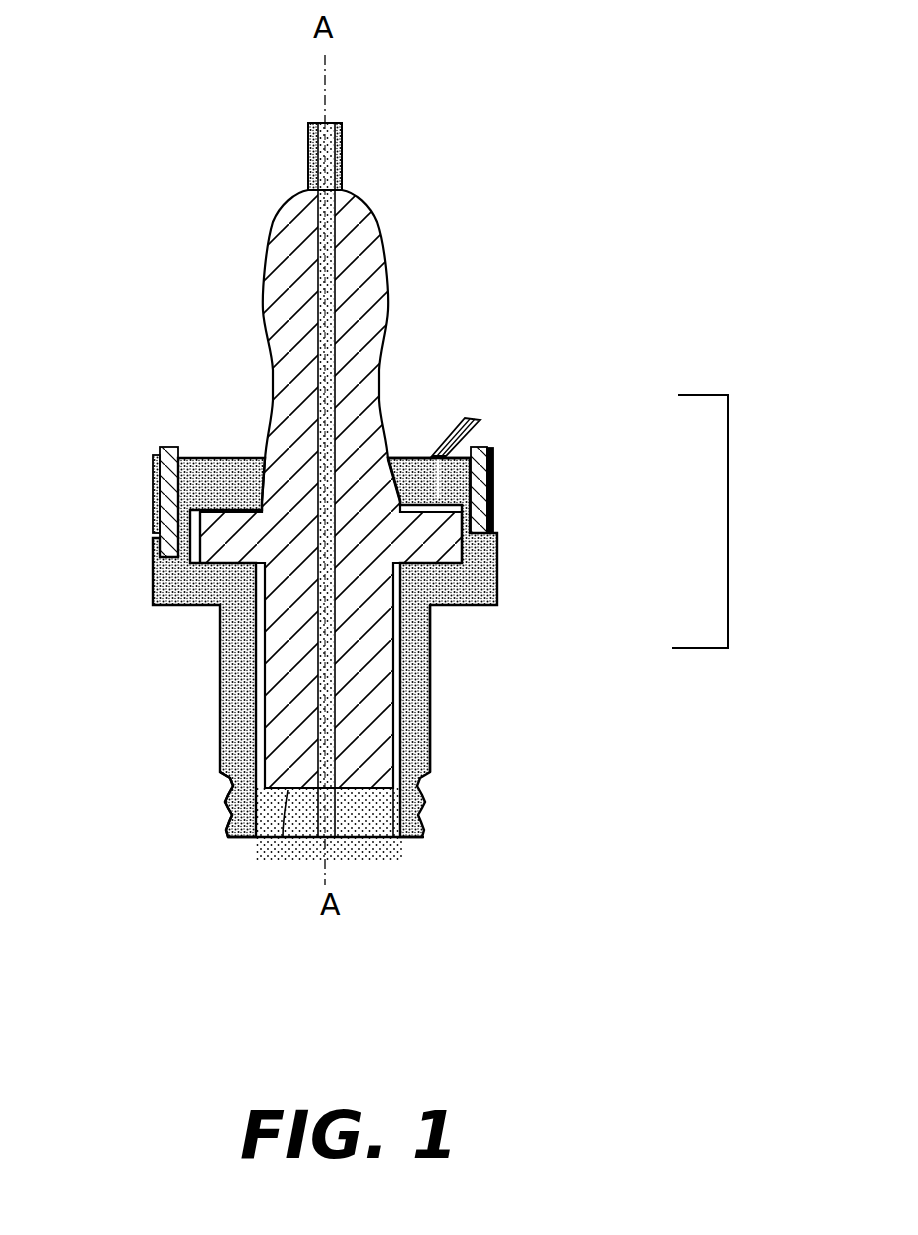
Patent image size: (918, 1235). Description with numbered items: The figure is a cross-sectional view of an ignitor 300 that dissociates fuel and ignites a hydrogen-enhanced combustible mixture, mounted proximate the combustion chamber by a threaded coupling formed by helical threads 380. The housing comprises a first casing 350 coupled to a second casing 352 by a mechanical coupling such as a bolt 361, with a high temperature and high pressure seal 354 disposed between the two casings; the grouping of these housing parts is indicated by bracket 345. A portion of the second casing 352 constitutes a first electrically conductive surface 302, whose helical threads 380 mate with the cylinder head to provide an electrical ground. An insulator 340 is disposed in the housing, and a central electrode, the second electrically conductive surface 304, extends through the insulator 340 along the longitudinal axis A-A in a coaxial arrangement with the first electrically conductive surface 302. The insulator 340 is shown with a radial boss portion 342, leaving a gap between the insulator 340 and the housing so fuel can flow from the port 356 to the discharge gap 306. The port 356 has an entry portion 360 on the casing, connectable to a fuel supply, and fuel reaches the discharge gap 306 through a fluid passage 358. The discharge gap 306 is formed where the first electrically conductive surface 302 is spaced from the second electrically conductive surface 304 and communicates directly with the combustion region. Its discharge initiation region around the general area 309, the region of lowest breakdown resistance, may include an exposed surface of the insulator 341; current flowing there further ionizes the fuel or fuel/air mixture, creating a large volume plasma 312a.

The ignitor 300 is at (530, 50).
The insulator 340 is at (380, 247).
The central electrode 304 is at (328, 843).
The second casing 352 is at (503, 577).
The first casing 350 is at (505, 467).
The seal 354 is at (490, 522).
The bolt 361 is at (175, 446).
The port 356 is at (473, 418).
The entry portion 360 is at (415, 449).
The radial boss portion 342 is at (208, 551).
The fluid passage 358 is at (432, 751).
The helical threads 380 is at (230, 818).
The first electrically conductive surface 302 is at (228, 837).
The discharge initiation region 309 is at (275, 836).
The discharge gap 306 is at (358, 820).
The surface of the insulator 341 is at (380, 797).
The large volume plasma 312a is at (392, 850).
The shell assembly 345 is at (730, 508).